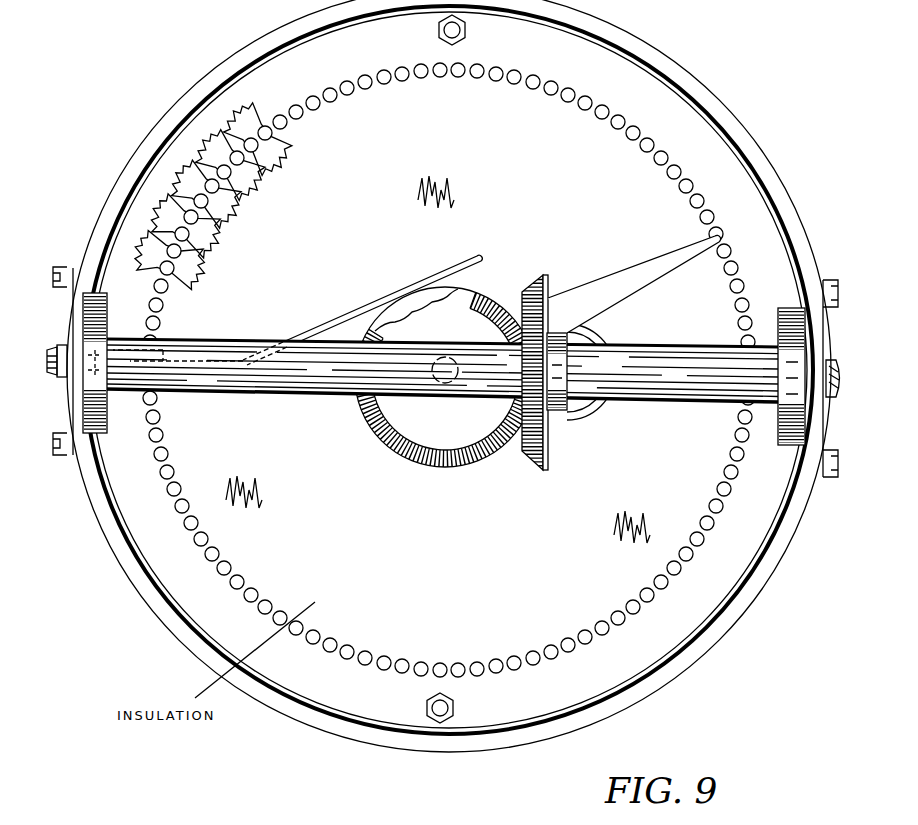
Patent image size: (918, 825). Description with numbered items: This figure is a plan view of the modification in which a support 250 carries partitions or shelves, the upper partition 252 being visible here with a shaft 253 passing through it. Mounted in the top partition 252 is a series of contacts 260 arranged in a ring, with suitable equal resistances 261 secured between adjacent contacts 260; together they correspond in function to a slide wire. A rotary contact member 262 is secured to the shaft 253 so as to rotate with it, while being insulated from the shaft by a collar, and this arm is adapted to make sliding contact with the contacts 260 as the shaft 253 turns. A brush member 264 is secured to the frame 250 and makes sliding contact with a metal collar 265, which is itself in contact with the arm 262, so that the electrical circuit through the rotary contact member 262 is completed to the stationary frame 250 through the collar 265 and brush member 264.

The support 250 is at (706, 614).
The upper partition 252 is at (548, 563).
The shaft 253 is at (441, 384).
The contacts 260 is at (257, 171).
The resistances 261 is at (232, 185).
The rotary contact member 262 is at (623, 278).
The brush member 264 is at (306, 330).
The metal collar 265 is at (461, 289).